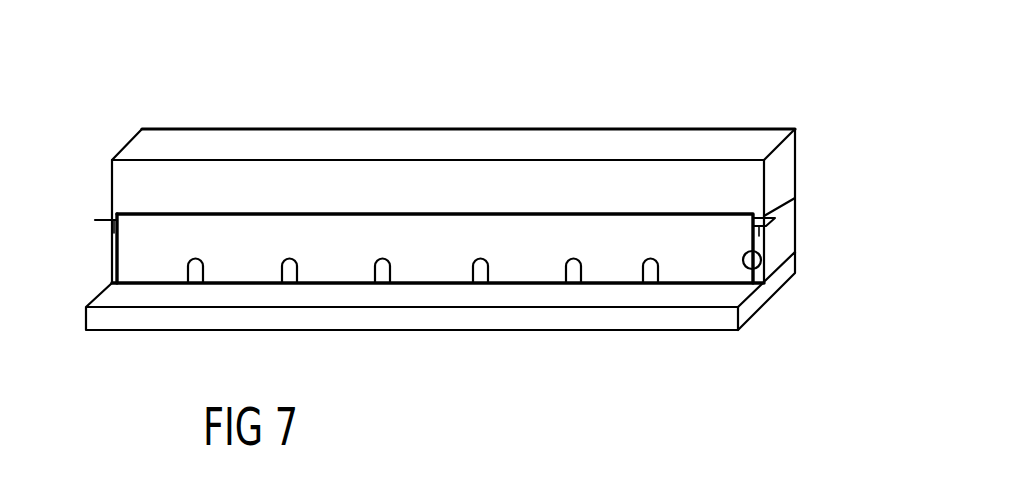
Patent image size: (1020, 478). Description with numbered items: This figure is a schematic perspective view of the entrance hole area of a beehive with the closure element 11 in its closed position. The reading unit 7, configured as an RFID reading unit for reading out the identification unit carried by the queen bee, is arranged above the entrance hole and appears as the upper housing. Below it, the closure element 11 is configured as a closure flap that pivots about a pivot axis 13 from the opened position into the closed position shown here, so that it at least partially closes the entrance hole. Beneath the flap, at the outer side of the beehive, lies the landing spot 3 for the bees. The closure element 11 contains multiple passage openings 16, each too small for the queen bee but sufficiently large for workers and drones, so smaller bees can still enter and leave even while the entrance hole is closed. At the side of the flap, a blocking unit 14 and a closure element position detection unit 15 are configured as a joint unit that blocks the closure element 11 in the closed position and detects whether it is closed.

The landing spot 3 is at (673, 292).
The reading unit 7 is at (658, 138).
The closure element 11 is at (602, 172).
The pivot axis 13 is at (105, 216).
The blocking unit 14 is at (826, 264).
The closure element position detection unit 15 is at (757, 263).
The passage opening 16 is at (195, 275).